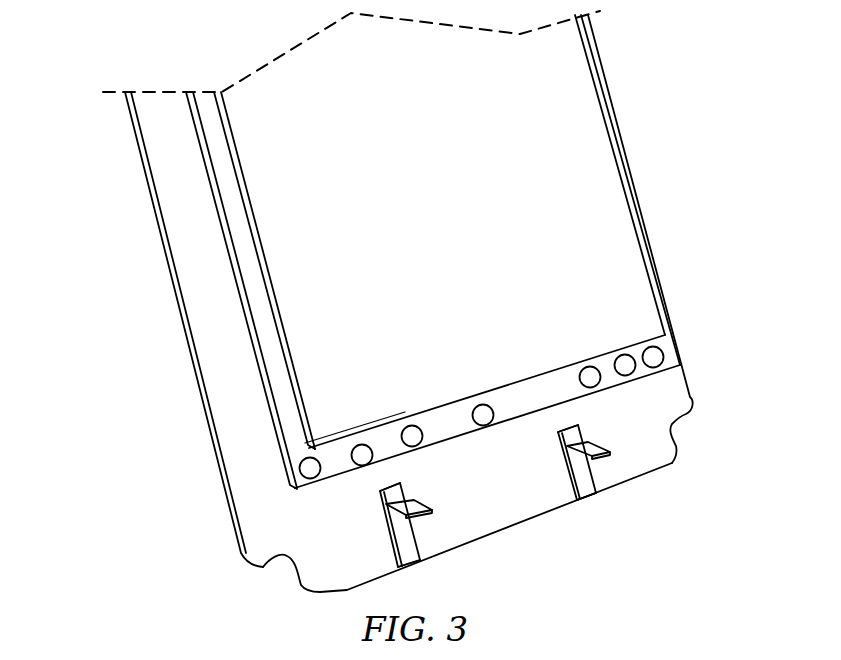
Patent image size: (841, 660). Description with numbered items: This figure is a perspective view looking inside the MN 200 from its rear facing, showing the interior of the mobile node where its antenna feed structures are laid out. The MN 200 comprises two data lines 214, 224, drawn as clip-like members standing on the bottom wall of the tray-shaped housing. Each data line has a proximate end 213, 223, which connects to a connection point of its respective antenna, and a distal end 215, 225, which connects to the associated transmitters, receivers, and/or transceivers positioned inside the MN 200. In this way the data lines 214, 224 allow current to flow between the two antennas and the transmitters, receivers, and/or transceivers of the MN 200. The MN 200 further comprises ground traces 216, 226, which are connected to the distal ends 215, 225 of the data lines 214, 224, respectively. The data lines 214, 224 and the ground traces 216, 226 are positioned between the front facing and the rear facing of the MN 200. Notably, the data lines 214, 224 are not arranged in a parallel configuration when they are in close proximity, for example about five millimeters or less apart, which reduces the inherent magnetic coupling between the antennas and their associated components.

The MN 200 is at (127, 49).
The proximate end 213 is at (600, 457).
The data line 214 is at (610, 475).
The distal end 215 is at (558, 440).
The ground trace 216 is at (589, 499).
The proximate end 223 is at (416, 502).
The data line 224 is at (405, 537).
The distal end 225 is at (384, 494).
The ground trace 226 is at (413, 566).